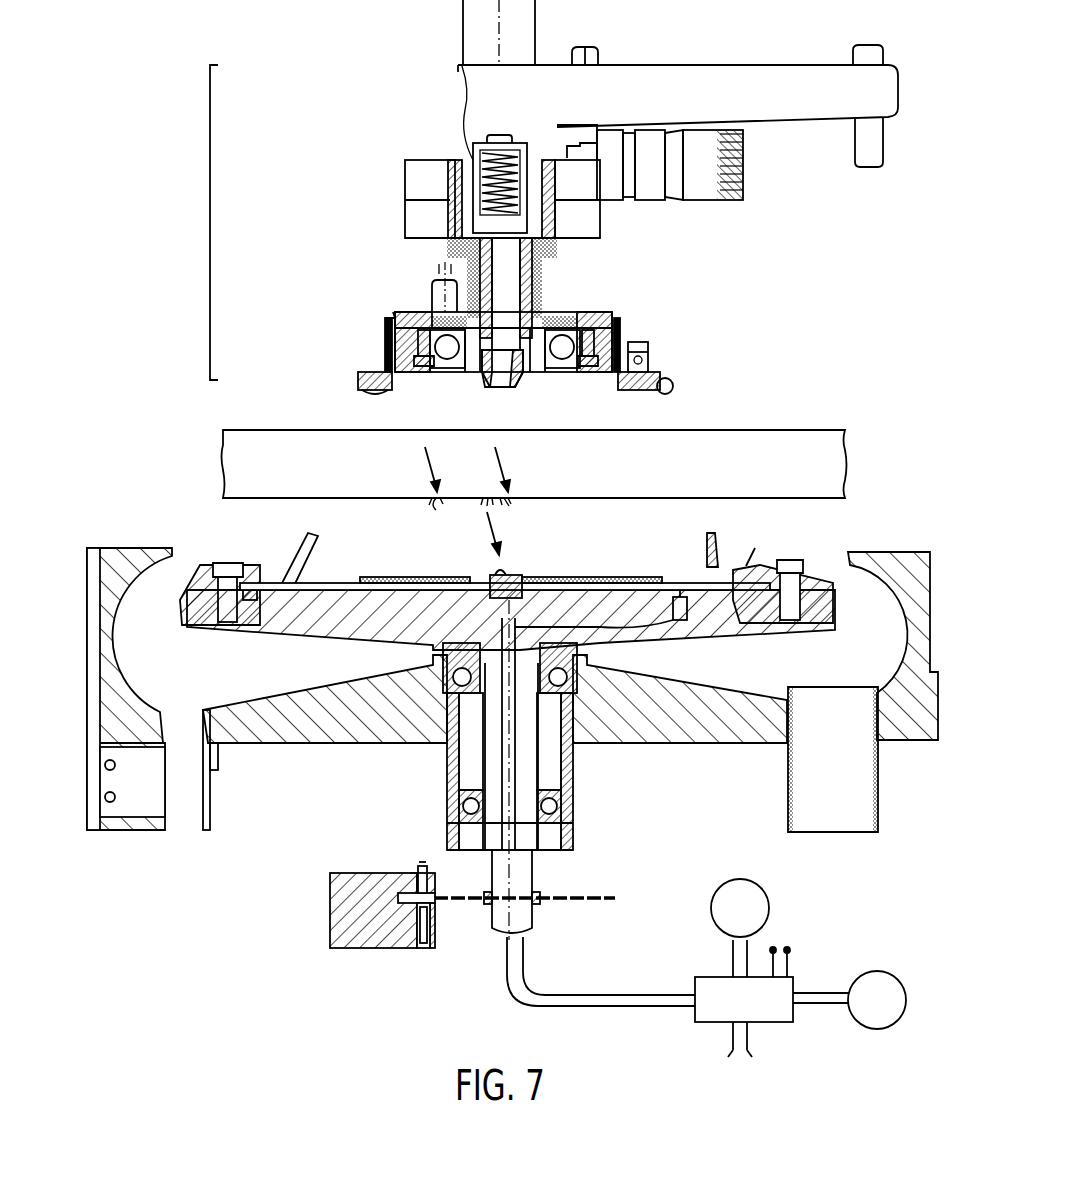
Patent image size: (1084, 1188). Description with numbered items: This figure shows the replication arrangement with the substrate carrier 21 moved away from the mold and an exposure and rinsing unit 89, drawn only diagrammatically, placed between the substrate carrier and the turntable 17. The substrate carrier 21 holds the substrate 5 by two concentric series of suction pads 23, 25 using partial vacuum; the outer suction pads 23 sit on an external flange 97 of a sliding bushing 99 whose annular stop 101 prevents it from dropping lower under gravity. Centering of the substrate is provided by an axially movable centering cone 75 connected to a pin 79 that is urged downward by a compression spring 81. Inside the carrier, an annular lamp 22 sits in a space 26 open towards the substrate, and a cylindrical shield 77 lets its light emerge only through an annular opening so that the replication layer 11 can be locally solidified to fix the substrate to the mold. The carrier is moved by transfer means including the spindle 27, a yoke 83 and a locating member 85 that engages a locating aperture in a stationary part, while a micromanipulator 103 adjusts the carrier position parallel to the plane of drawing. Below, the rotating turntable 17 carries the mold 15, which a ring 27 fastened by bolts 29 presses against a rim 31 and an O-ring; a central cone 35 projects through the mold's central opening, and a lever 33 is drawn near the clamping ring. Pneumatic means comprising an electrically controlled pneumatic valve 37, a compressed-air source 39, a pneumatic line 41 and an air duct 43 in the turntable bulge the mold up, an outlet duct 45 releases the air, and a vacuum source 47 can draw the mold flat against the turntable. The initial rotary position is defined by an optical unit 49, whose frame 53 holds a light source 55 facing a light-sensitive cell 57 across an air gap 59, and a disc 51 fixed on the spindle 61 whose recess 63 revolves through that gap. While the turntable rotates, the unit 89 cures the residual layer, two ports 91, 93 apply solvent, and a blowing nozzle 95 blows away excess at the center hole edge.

The substrate 5 is at (410, 576).
The replication layer 11 is at (494, 575).
The mold 15 is at (328, 583).
The turntable 17 is at (310, 620).
The substrate carrier 21 is at (210, 222).
The annular lamp 22 is at (576, 318).
The suction pads 23 is at (660, 372).
The suction pads 25 is at (592, 370).
The space 26 is at (462, 368).
The spindle / ring 27 is at (476, 20).
The bolts 29 is at (792, 566).
The rim 31 is at (252, 618).
The lever 33 is at (265, 575).
The central cone 35 is at (528, 555).
The pneumatic valve 37 is at (762, 1005).
The compressed-air source 39 is at (875, 985).
The pneumatic line 41 is at (550, 1000).
The air duct 43 is at (650, 633).
The outlet duct 45 is at (730, 1048).
The vacuum source 47 is at (740, 890).
The optical unit 49 is at (318, 944).
The disc 51 is at (586, 898).
The frame 53 is at (367, 935).
The light source 55 is at (437, 918).
The light-sensitive cell 57 is at (418, 872).
The air gap 59 is at (398, 893).
The spindle 61 is at (528, 765).
The recess 63 is at (408, 874).
The centering cone 75 is at (500, 384).
The cylindrical shield 77 is at (475, 305).
The pin 79 is at (495, 228).
The compression spring 81 is at (472, 165).
The yoke 83 is at (658, 85).
The locating member 85 is at (870, 153).
The exposure and rinsing unit 89 is at (680, 452).
The port 91 is at (436, 505).
The port 93 is at (540, 526).
The blowing nozzle 95 is at (486, 505).
The external flange 97 is at (372, 372).
The sliding bushing 99 is at (384, 330).
The annular stop 101 is at (388, 316).
The micromanipulator 103 is at (655, 186).